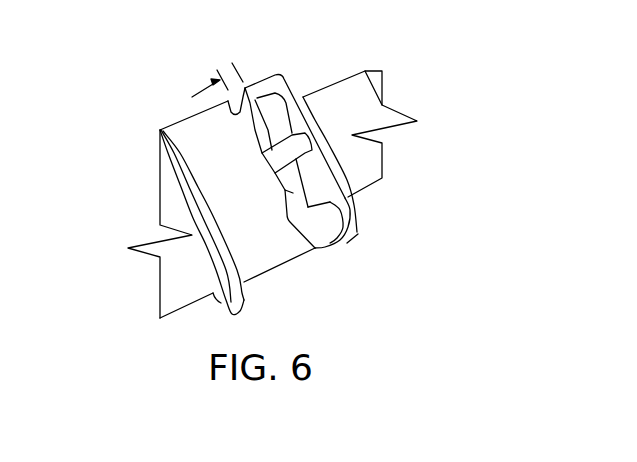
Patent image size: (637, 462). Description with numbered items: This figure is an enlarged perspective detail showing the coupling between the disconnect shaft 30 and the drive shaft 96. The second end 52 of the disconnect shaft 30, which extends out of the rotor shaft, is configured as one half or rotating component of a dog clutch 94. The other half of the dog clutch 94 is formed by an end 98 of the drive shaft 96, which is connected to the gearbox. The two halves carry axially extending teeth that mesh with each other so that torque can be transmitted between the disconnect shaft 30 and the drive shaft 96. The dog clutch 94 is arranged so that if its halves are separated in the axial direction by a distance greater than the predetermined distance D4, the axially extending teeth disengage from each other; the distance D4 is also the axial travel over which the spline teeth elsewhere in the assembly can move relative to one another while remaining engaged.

The disconnect shaft 30 is at (154, 206).
The second disconnect shaft end 52 is at (213, 150).
The dog clutch 94 is at (224, 63).
The predetermined distance D4 is at (240, 68).
The drive shaft 96 is at (362, 120).
The end of the drive shaft 98 is at (343, 235).